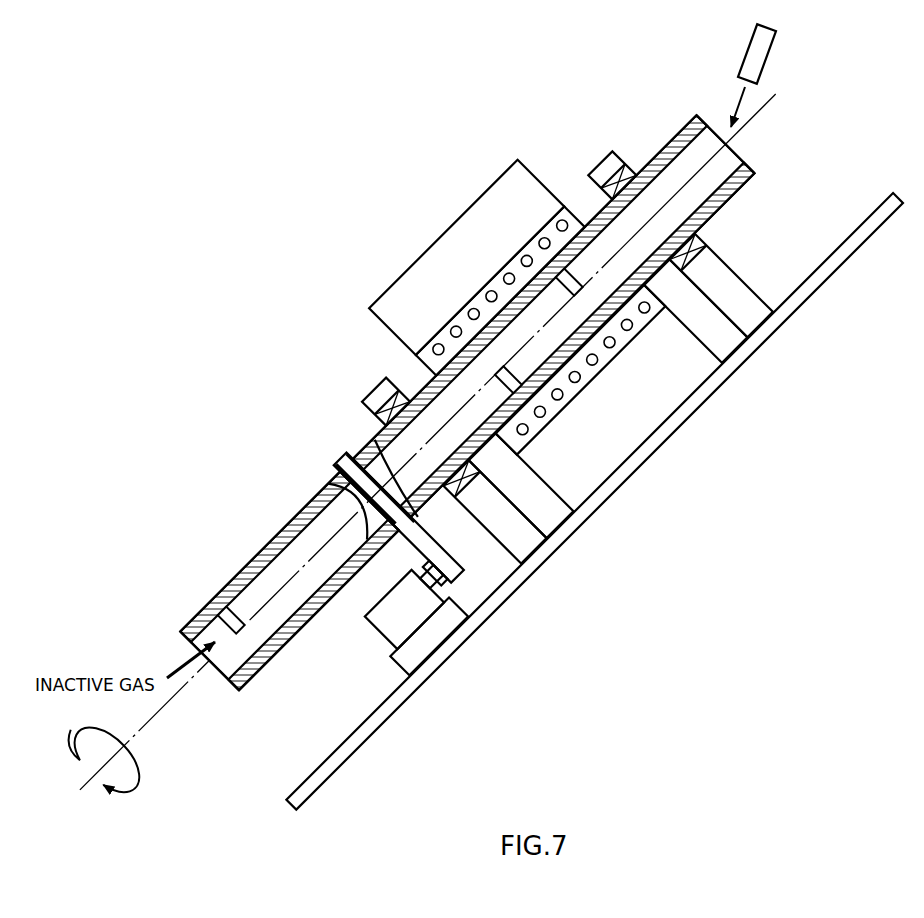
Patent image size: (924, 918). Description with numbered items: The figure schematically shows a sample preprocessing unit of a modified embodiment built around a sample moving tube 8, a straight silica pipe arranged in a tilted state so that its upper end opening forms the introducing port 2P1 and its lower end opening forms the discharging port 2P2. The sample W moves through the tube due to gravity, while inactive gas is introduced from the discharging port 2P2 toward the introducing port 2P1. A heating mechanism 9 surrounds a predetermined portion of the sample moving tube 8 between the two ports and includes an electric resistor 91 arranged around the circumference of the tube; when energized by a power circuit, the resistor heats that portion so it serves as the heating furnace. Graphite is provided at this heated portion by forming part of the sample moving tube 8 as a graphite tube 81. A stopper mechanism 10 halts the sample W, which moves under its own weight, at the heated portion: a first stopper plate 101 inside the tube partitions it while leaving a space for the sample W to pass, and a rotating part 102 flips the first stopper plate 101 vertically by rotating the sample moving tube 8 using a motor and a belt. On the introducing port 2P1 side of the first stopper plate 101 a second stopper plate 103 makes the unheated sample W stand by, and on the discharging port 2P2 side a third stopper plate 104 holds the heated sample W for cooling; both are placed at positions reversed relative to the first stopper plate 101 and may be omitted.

The sample moving tube 8 is at (290, 518).
The heating mechanism 9 is at (477, 268).
The electric resistor 91 is at (520, 255).
The stopper mechanism 10 is at (579, 291).
The first stopper plate 101 is at (518, 406).
The rotating part 102 is at (377, 634).
The second stopper plate 103 is at (578, 286).
The third stopper plate 104 is at (240, 616).
The graphite tube 81 is at (606, 346).
The sample W is at (751, 50).
The introducing port 2P1 is at (742, 148).
The discharging port 2P2 is at (215, 674).